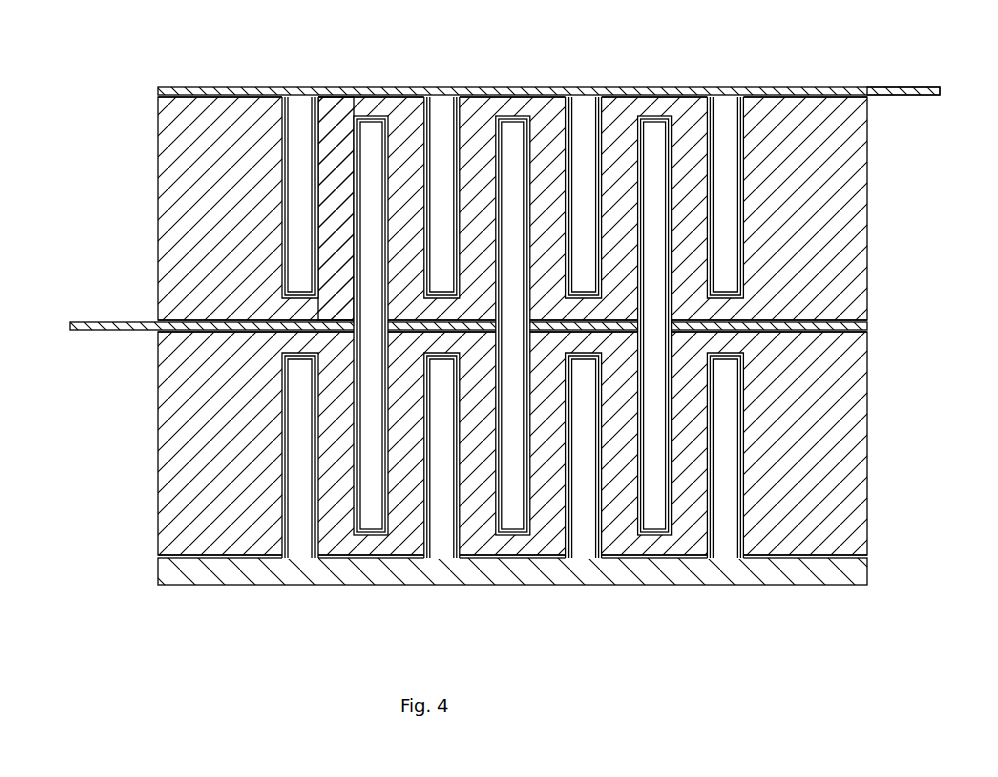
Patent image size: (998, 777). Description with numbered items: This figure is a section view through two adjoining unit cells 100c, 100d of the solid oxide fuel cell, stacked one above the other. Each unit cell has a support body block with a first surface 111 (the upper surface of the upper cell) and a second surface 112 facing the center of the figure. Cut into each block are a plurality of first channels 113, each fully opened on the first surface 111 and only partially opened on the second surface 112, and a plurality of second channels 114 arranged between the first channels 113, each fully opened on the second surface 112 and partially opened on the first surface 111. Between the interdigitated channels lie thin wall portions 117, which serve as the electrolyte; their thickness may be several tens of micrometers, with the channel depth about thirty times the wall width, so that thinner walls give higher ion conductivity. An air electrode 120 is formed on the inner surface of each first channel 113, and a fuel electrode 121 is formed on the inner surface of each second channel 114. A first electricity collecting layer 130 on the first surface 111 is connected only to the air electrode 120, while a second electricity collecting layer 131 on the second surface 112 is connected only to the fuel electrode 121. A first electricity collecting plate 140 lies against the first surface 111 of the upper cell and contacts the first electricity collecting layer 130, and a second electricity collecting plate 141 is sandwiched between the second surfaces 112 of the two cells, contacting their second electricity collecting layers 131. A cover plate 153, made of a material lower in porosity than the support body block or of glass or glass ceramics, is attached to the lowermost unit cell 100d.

The unit cell 100c is at (880, 211).
The unit cell 100d is at (880, 443).
The first surface 111 is at (200, 98).
The second surface 112 is at (205, 320).
The first channel 113 is at (437, 162).
The second channel 114 is at (648, 162).
The wall portion 117 is at (338, 178).
The air electrode 120 is at (296, 204).
The fuel electrode 121 is at (507, 118).
The first electricity collecting layer 130 is at (262, 92).
The second electricity collecting layer 131 is at (500, 153).
The first electricity collecting plate 140 is at (905, 88).
The second electricity collecting plate 141 is at (95, 322).
The cover plate 153 is at (790, 573).